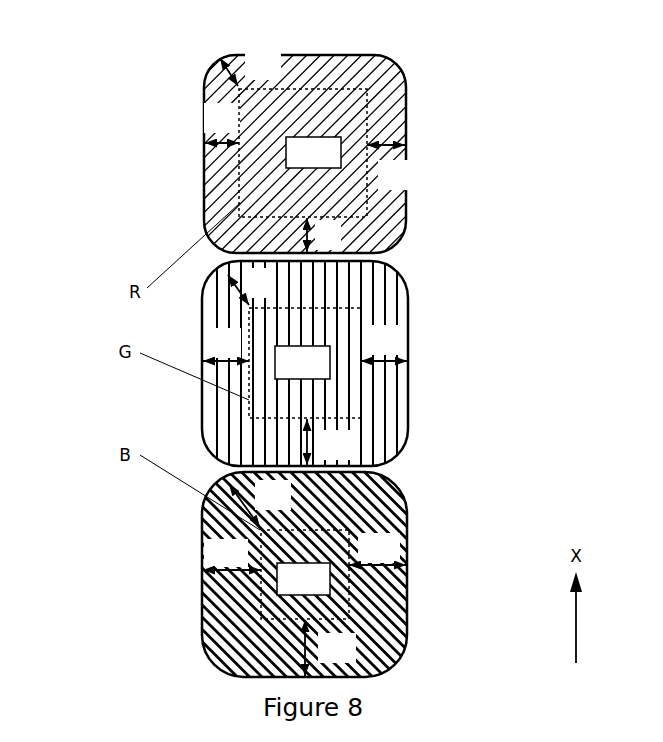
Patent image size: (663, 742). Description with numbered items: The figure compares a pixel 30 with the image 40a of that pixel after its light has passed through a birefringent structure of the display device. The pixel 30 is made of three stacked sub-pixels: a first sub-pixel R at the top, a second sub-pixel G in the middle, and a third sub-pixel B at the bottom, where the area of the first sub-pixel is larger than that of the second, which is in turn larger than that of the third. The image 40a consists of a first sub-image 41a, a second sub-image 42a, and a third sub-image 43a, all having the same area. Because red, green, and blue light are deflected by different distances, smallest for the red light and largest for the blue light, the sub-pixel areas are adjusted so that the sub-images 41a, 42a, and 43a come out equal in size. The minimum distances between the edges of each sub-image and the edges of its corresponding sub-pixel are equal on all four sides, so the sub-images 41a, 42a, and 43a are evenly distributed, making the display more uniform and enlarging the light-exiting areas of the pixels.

The pixel 30 is at (125, 280).
The image 40a is at (497, 258).
The first sub-image 41a is at (395, 238).
The second sub-image 42a is at (408, 330).
The third sub-image 43a is at (405, 512).